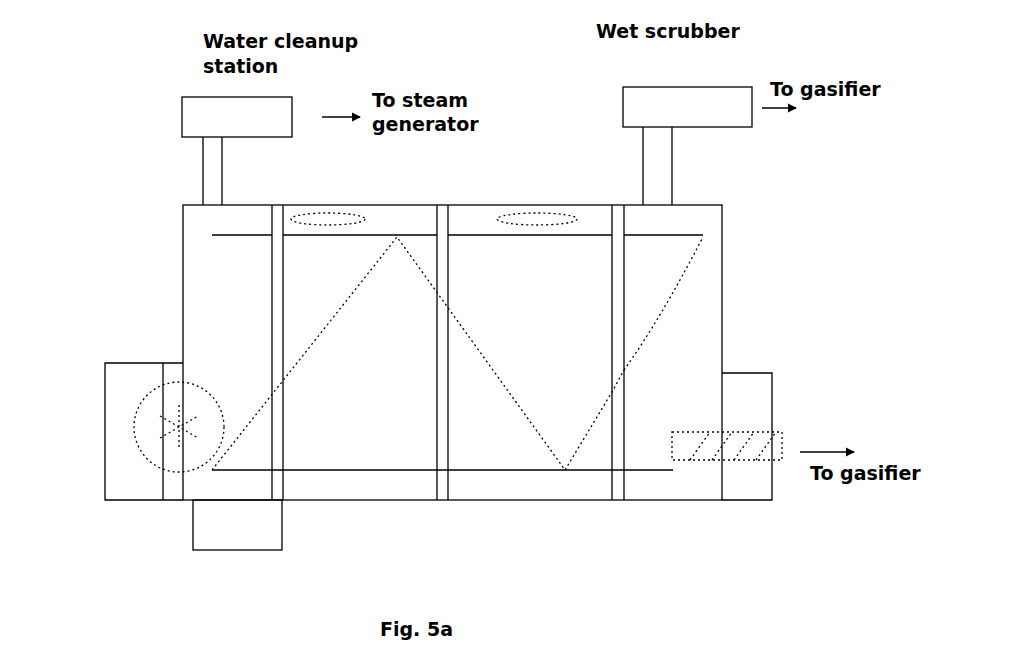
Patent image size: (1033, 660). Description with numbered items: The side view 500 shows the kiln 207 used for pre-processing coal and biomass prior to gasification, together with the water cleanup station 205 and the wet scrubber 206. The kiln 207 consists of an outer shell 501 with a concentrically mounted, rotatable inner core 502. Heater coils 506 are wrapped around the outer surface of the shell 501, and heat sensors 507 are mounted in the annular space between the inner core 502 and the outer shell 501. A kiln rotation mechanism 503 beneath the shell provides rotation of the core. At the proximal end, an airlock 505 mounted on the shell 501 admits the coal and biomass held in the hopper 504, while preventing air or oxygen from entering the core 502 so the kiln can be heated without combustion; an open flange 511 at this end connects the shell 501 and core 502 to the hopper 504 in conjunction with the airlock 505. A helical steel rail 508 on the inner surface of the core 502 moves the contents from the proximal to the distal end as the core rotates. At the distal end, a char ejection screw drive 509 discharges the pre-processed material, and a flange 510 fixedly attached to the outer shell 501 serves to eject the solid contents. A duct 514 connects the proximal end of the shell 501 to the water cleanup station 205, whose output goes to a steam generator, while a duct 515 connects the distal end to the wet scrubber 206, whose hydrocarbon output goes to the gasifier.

The side view of kiln 500 is at (60, 630).
The outer shell 501 is at (538, 513).
The inner core 502 is at (368, 482).
The kiln rotation mechanism 503 is at (245, 560).
The hopper 504 is at (95, 470).
The airlock 505 is at (152, 400).
The heater coils 506 is at (605, 450).
The heat sensors 507 is at (512, 212).
The helical steel rail 508 is at (663, 325).
The char ejection screw drive 509 is at (708, 470).
The flange 510 is at (752, 500).
The open flange 511 is at (175, 500).
The duct 514 is at (193, 175).
The duct 515 is at (683, 178).
The water cleanup station 205 is at (193, 78).
The wet scrubber 206 is at (611, 82).
The kiln 207 is at (733, 206).